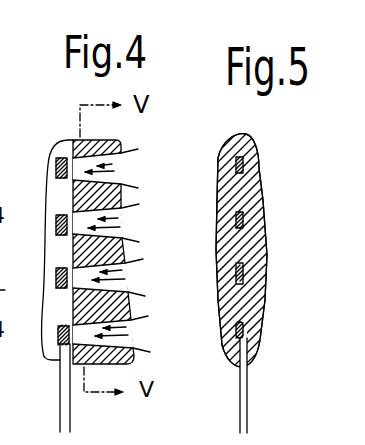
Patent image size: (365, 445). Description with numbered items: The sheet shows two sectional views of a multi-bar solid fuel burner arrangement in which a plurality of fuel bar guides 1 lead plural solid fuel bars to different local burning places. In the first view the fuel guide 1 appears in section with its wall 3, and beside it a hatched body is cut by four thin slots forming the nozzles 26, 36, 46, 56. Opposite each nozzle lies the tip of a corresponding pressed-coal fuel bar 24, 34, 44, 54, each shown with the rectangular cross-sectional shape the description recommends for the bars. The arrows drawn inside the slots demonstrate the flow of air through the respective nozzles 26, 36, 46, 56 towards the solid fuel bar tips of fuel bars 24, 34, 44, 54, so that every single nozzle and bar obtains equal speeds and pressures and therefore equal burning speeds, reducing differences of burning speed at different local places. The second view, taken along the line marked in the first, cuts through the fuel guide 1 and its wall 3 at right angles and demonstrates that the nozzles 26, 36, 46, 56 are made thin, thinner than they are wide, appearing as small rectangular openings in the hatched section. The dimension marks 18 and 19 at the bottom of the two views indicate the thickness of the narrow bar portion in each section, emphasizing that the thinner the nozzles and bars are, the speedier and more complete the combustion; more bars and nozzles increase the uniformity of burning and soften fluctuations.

In FIG. 5, the fuel guide 1 is at (233, 194).
In FIG. 5, the wall 3 is at (233, 194).
In FIG. 4, the rod thickness 18 is at (32, 417).
In FIG. 5, the rod thickness 19 is at (203, 413).
In FIG. 4, the fuel bar 24 is at (55, 171).
In FIG. 4, the nozzle 26 is at (114, 166).
In FIG. 5, the nozzle 26 is at (244, 165).
In FIG. 4, the fuel bar 34 is at (55, 226).
In FIG. 4, the nozzle 36 is at (122, 221).
In FIG. 5, the nozzle 36 is at (244, 220).
In FIG. 4, the fuel bar 44 is at (55, 280).
In FIG. 4, the nozzle 46 is at (127, 275).
In FIG. 5, the nozzle 46 is at (244, 273).
In FIG. 4, the fuel bar 54 is at (57, 334).
In FIG. 4, the nozzle 56 is at (131, 330).
In FIG. 5, the nozzle 56 is at (244, 328).